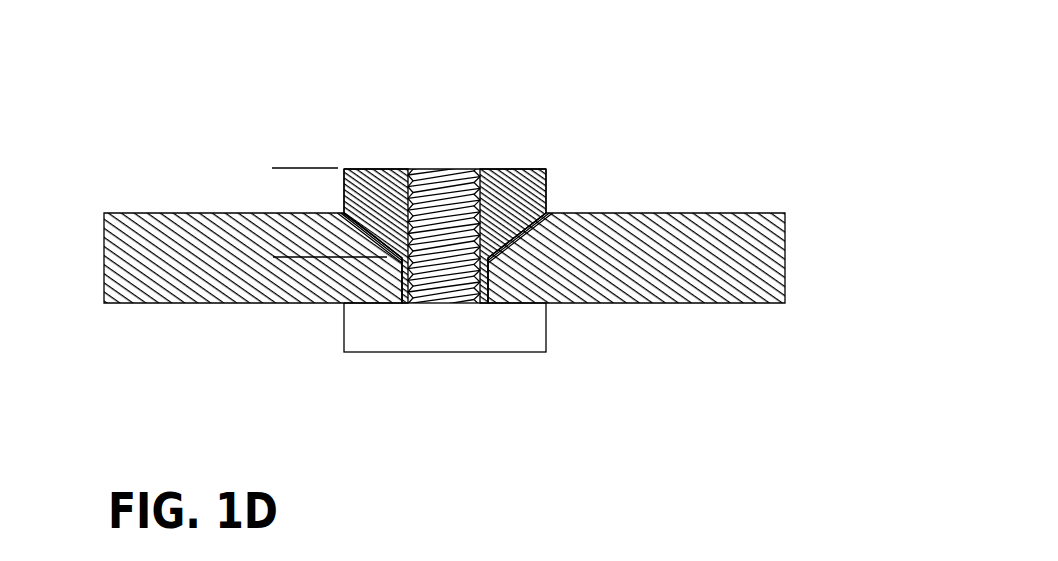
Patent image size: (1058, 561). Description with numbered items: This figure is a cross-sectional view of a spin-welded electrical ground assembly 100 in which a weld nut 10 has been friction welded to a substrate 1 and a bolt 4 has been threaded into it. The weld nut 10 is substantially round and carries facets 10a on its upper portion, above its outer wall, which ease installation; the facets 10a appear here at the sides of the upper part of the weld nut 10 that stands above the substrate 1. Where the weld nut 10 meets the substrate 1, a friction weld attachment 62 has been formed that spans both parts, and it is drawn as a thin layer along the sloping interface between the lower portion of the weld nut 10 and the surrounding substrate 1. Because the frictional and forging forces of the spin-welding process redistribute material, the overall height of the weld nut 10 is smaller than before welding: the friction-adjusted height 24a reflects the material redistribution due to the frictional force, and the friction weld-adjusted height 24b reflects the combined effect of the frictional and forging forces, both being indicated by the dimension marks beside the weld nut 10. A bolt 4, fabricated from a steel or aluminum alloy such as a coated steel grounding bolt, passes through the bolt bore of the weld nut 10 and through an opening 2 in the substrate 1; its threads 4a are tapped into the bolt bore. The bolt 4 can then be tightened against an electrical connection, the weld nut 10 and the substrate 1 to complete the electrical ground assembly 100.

The ground assembly 100 is at (465, 229).
The substrate 1 is at (742, 240).
The through hole 2 is at (484, 305).
The weld nut 10 is at (461, 181).
The facets 10a is at (342, 192).
The bolt 4 is at (437, 335).
The threads 4a is at (432, 197).
The friction weld attachment 62 is at (520, 248).
The friction-adjusted height 24a is at (291, 177).
The friction weld-adjusted height 24b is at (291, 248).